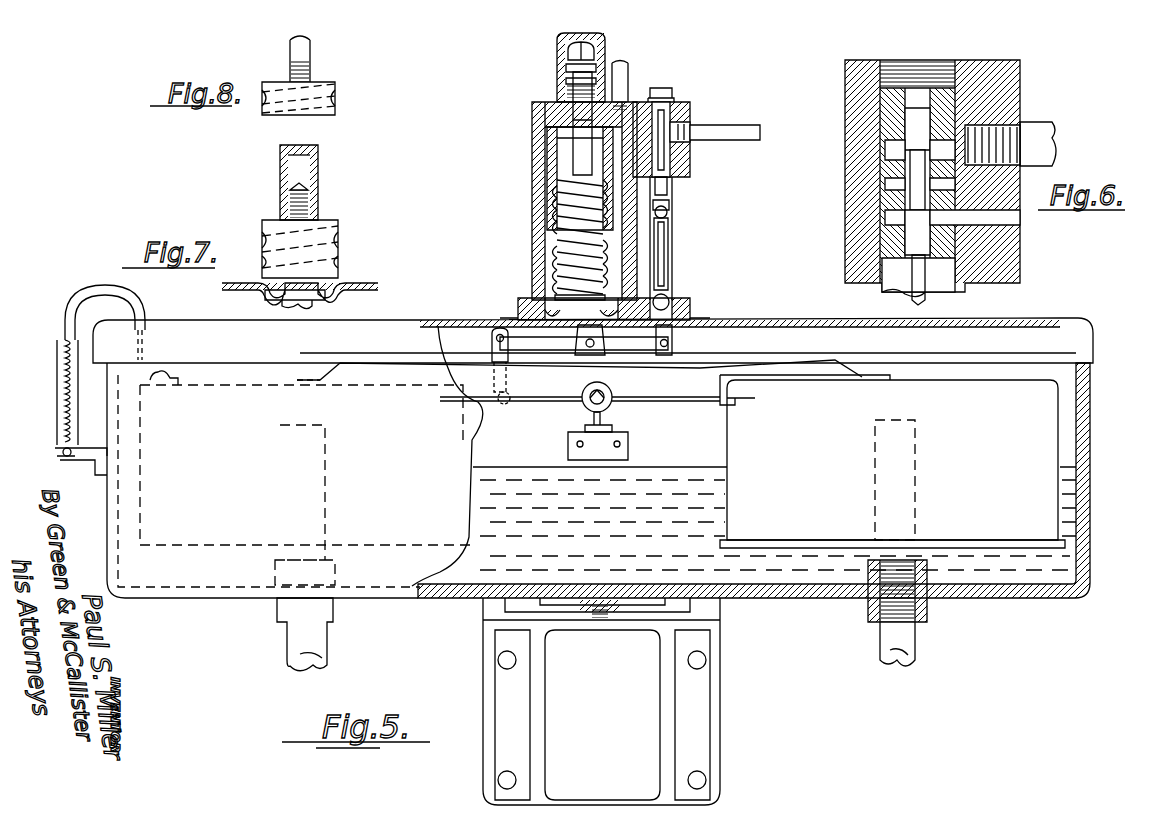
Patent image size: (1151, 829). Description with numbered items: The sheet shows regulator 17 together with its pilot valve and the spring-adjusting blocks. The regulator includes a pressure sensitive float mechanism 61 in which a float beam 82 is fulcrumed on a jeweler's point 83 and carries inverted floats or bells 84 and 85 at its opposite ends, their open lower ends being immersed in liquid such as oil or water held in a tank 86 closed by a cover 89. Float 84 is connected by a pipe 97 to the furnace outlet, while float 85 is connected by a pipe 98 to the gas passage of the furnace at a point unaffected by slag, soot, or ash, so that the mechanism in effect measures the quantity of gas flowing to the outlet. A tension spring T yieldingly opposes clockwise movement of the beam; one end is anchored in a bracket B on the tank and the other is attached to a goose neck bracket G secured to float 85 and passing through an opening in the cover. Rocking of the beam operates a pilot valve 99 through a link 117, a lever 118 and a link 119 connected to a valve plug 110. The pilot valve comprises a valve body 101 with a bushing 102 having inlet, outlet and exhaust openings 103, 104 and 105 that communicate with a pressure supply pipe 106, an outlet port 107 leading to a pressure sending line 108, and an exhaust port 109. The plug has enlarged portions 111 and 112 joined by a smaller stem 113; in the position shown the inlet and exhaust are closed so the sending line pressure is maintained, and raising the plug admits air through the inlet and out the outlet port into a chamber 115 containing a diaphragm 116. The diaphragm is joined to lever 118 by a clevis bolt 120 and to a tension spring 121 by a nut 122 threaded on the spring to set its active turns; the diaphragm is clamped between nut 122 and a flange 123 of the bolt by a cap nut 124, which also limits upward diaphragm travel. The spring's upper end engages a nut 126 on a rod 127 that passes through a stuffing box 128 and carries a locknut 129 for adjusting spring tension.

In FIG. 5, the regulator 17 is at (619, 176).
In FIG. 5, the pressure sensitive float mechanism 61 is at (1118, 430).
In FIG. 5, the float beam 82 is at (488, 384).
In FIG. 5, the jeweler's point 83 is at (586, 405).
In FIG. 5, the float 84 is at (892, 461).
In FIG. 5, the float 85 is at (195, 555).
In FIG. 5, the tank 86 is at (1083, 470).
In FIG. 5, the cover 89 is at (1050, 318).
In FIG. 5, the pipe 97 is at (917, 642).
In FIG. 5, the pipe 98 is at (327, 640).
In FIG. 6, the pilot valve 99 is at (1050, 94).
In FIG. 5, the pilot valve 99 is at (675, 132).
In FIG. 6, the valve body 101 is at (1020, 70).
In FIG. 6, the bushing 102 is at (880, 108).
In FIG. 6, the inlet opening 103 is at (890, 150).
In FIG. 6, the outlet opening 104 is at (895, 184).
In FIG. 6, the exhaust opening 105 is at (890, 218).
In FIG. 6, the pressure supply pipe 106 is at (1055, 134).
In FIG. 5, the pressure supply pipe 106 is at (726, 135).
In FIG. 6, the outlet port 107 is at (865, 186).
In FIG. 5, the outlet port 107 is at (640, 145).
In FIG. 5, the pressure sending line 108 is at (628, 78).
In FIG. 6, the exhaust port 109 is at (1010, 215).
In FIG. 6, the valve plug 110 is at (916, 264).
In FIG. 6, the enlarged portion 111 is at (917, 129).
In FIG. 6, the enlarged portion 112 is at (917, 232).
In FIG. 6, the stem 113 is at (915, 172).
In FIG. 5, the pressure chamber 115 is at (540, 238).
In FIG. 7, the diaphragm 116 is at (352, 298).
In FIG. 5, the diaphragm 116 is at (530, 304).
In FIG. 5, the link 117 is at (495, 360).
In FIG. 5, the lever 118 is at (584, 340).
In FIG. 5, the link 119 is at (668, 258).
In FIG. 7, the clevis bolt 120 is at (306, 198).
In FIG. 5, the clevis bolt 120 is at (590, 330).
In FIG. 5, the tension spring 121 is at (558, 258).
In FIG. 7, the nut 122 is at (338, 243).
In FIG. 5, the nut 122 is at (560, 276).
In FIG. 7, the flange 123 is at (312, 300).
In FIG. 7, the cap nut 124 is at (318, 160).
In FIG. 8, the nut 126 is at (335, 101).
In FIG. 5, the nut 126 is at (558, 200).
In FIG. 8, the rod 127 is at (305, 50).
In FIG. 5, the rod 127 is at (573, 152).
In FIG. 5, the stuffing box 128 is at (552, 110).
In FIG. 5, the locknut 129 is at (600, 62).
In FIG. 5, the goose neck bracket G is at (64, 300).
In FIG. 5, the tension spring T is at (56, 404).
In FIG. 5, the bracket B is at (81, 463).